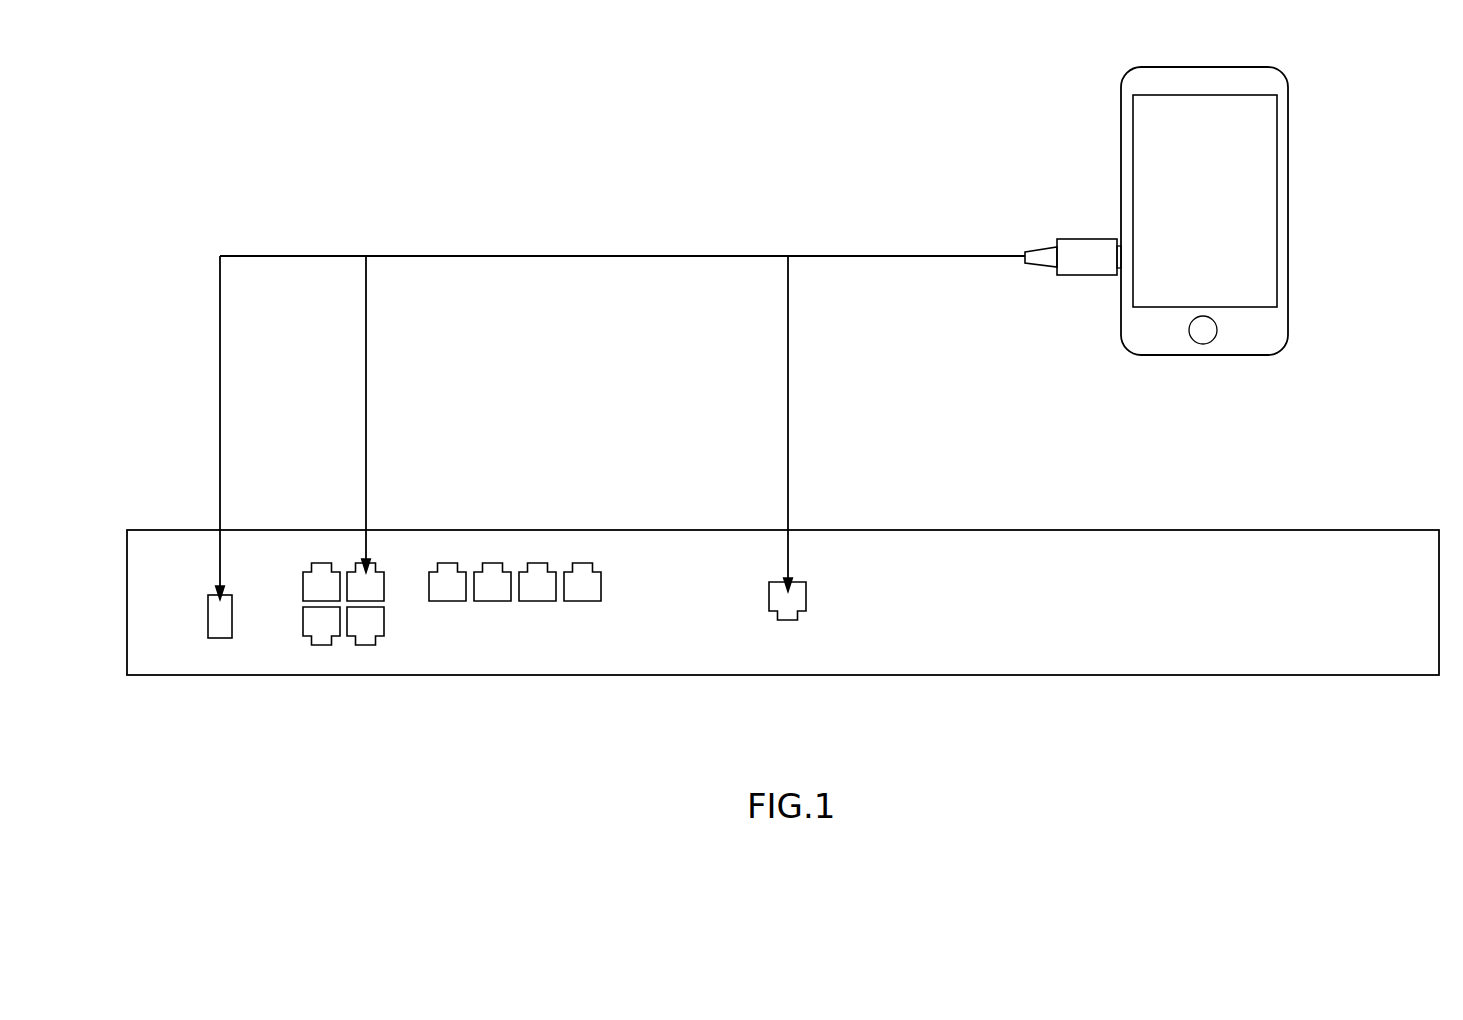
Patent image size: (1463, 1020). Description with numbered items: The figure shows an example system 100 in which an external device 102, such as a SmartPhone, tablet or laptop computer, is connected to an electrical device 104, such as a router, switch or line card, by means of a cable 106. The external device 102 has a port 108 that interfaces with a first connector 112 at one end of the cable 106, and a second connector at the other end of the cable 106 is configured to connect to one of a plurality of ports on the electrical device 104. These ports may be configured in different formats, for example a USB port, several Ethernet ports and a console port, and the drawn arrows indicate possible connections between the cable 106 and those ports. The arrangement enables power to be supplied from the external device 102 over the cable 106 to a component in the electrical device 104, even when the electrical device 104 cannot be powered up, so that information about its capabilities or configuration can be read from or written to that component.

The system 100 is at (419, 88).
The external device 102 is at (1290, 190).
The electrical device 104 is at (1337, 677).
The cable 106 is at (672, 254).
The port 108 is at (1104, 289).
The first connector 112 is at (1086, 238).